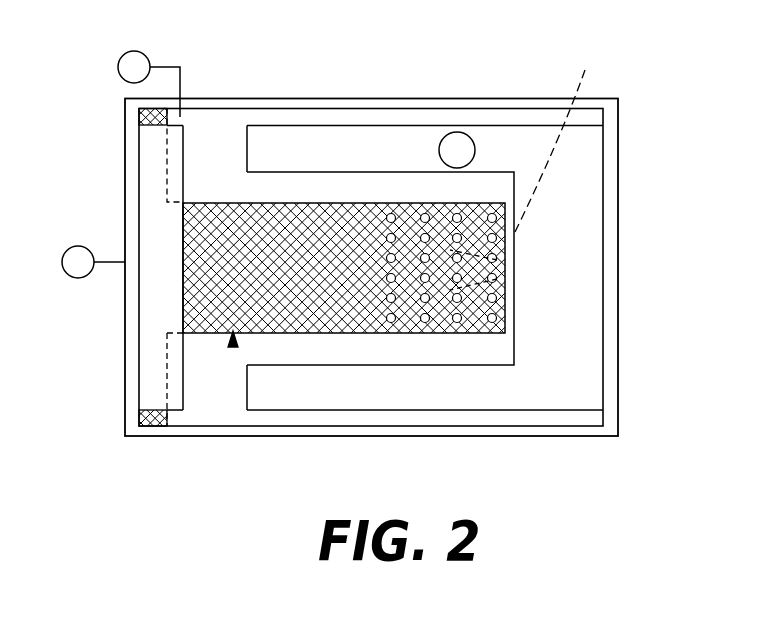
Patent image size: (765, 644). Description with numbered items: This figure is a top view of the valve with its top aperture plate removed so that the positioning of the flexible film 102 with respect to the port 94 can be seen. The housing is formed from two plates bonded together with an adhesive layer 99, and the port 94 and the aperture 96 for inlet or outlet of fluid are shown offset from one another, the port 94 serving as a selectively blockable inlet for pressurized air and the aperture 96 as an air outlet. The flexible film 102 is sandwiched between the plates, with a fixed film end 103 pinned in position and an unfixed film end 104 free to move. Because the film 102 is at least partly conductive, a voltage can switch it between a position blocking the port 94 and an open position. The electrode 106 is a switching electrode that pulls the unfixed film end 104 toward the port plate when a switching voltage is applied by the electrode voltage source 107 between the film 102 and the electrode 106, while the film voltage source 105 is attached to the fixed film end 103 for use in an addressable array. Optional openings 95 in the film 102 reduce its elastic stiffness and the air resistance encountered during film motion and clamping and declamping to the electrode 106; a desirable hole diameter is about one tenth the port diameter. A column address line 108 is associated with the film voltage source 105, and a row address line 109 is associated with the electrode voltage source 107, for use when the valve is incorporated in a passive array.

The port 94 is at (558, 135).
The openings 95 is at (497, 279).
The aperture 96 is at (463, 132).
The adhesive layer 99 is at (612, 215).
The flexible film 102 is at (233, 347).
The fixed film end 103 is at (148, 333).
The unfixed film end 104 is at (435, 333).
The film voltage source 105 is at (62, 260).
The electrode 106 is at (215, 132).
The electrode voltage source 107 is at (117, 67).
The column address line 108 is at (148, 133).
The row address line 109 is at (578, 126).